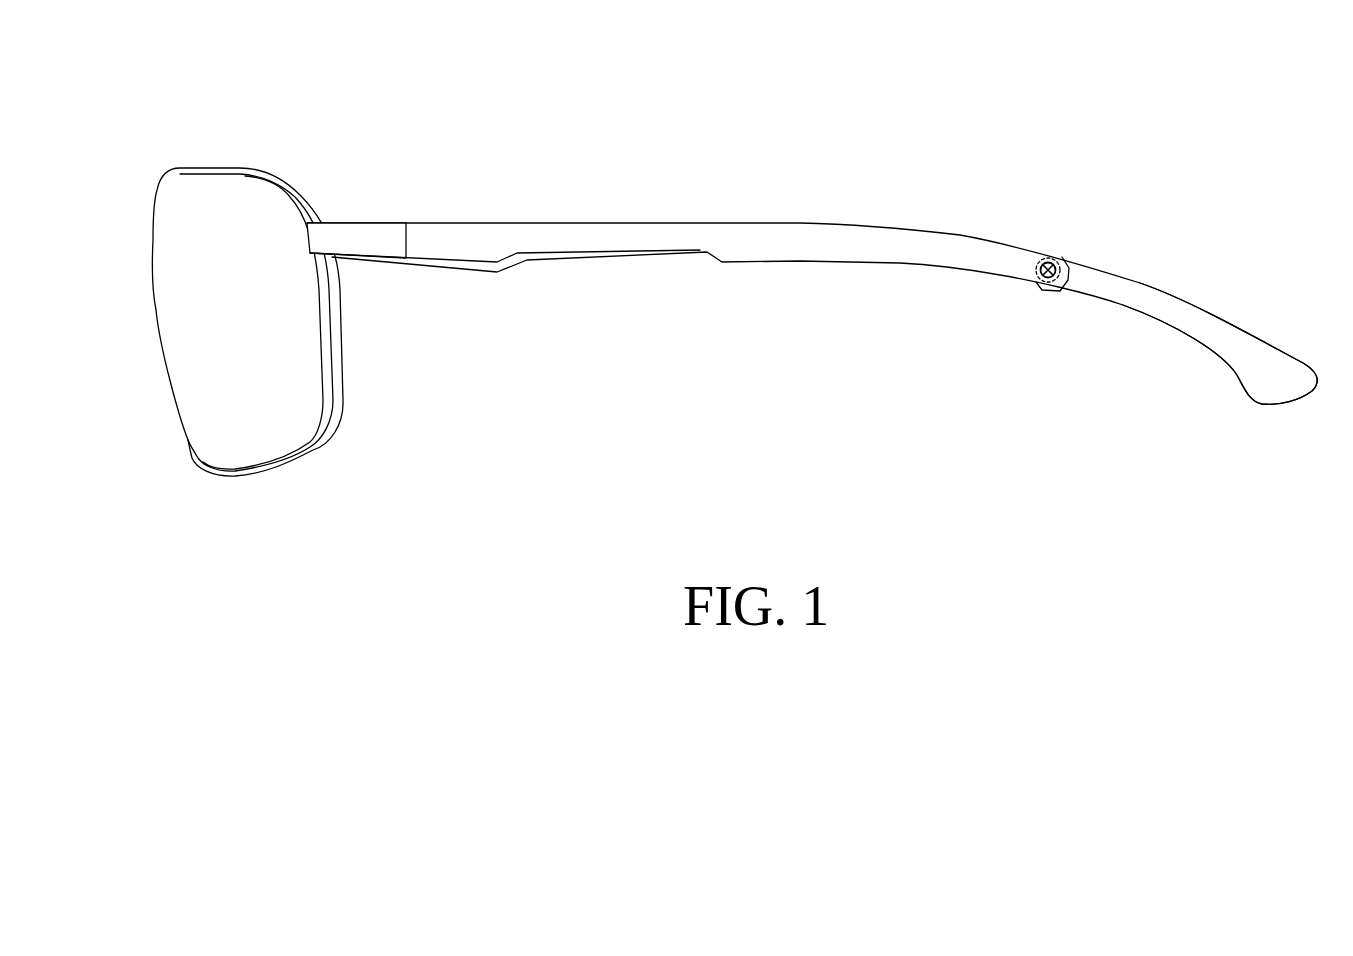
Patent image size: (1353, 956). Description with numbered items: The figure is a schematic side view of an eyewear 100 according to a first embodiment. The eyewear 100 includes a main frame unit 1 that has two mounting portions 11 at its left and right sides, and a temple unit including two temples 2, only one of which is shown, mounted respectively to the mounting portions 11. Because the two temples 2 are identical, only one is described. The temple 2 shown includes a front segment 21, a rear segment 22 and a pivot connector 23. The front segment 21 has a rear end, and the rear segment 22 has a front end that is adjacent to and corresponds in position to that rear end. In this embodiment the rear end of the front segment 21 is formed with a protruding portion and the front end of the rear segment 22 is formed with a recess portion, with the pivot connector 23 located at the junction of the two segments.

The eyewear 100 is at (1228, 130).
The main frame unit 1 is at (273, 173).
The mounting portion 11 is at (155, 200).
The temple 2 is at (1061, 234).
The front segment 21 is at (853, 238).
The rear segment 22 is at (1202, 322).
The pivot connector 23 is at (1040, 282).